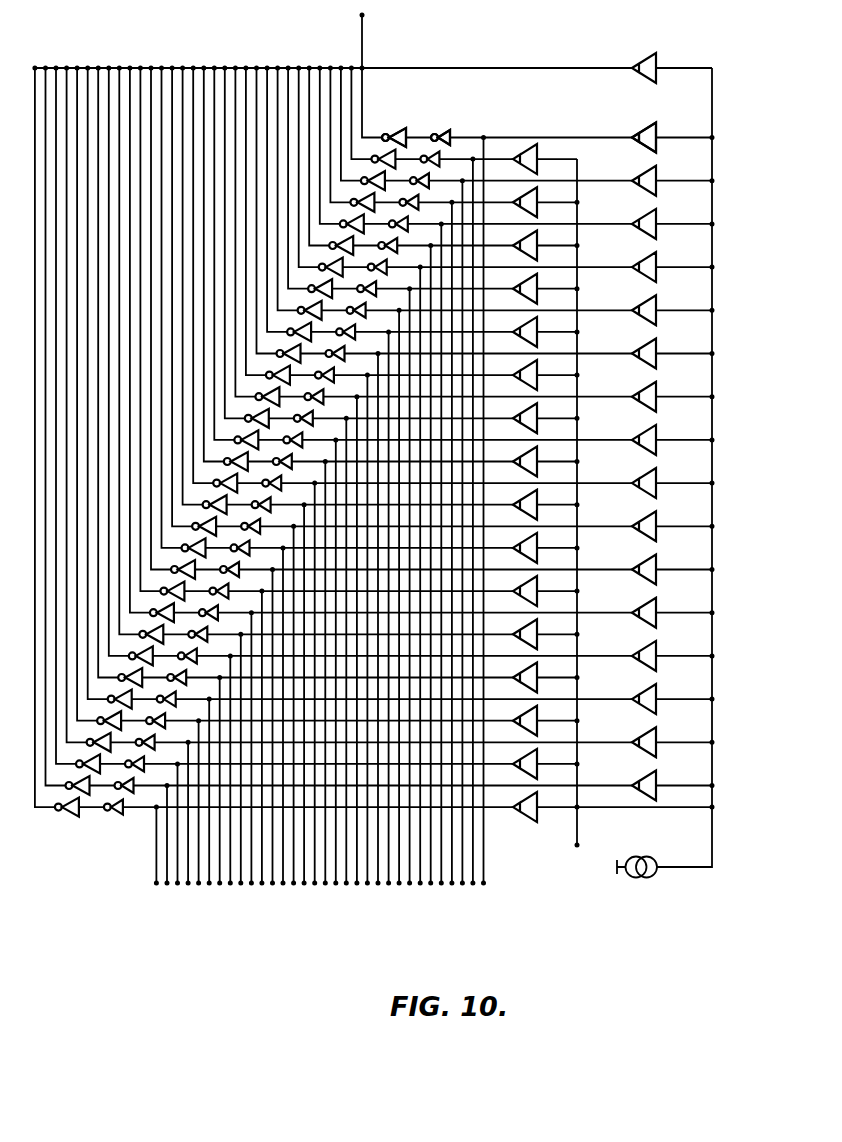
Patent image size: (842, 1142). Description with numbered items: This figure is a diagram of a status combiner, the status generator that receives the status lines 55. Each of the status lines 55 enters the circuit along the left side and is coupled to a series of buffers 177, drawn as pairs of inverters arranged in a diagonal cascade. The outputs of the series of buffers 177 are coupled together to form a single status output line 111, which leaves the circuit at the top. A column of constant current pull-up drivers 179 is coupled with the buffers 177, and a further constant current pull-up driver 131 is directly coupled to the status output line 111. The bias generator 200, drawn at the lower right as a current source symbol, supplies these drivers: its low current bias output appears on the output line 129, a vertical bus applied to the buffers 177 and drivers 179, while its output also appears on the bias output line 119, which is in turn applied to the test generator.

The status output line 111 is at (362, 40).
The constant current pull-up driver 131 is at (645, 50).
The buffers 177 is at (451, 123).
The constant current pull-up drivers 179 is at (657, 123).
The status lines 55 is at (498, 897).
The bias output line 119 is at (573, 822).
The bias generator 200 is at (636, 878).
The output line 129 is at (713, 849).